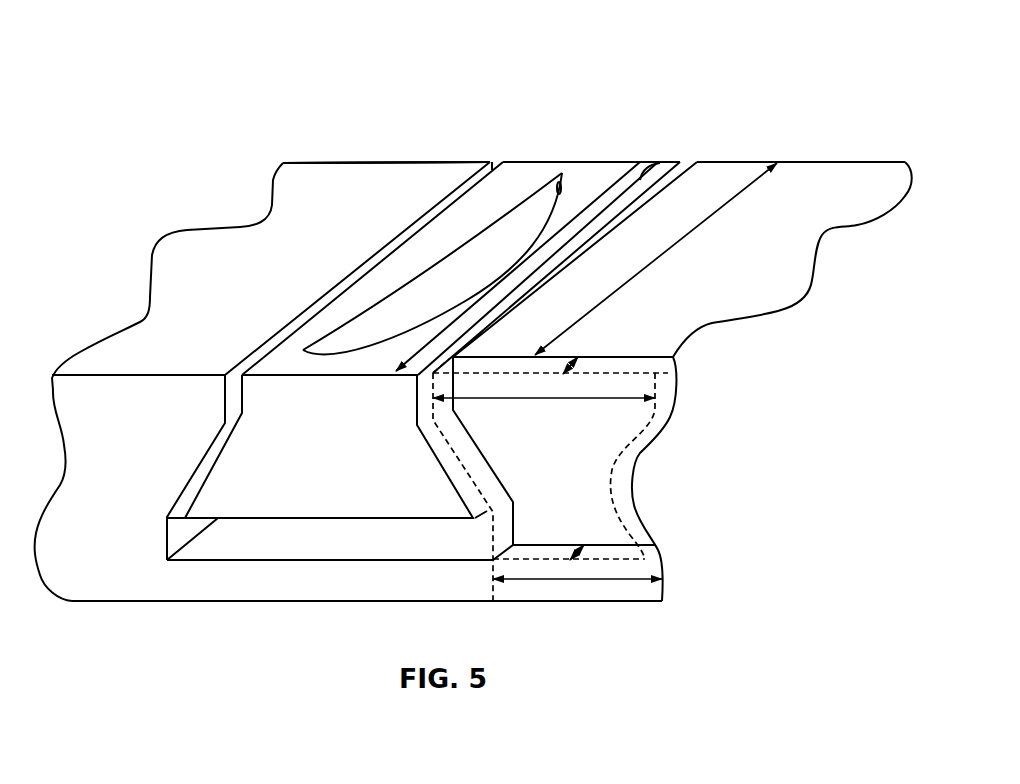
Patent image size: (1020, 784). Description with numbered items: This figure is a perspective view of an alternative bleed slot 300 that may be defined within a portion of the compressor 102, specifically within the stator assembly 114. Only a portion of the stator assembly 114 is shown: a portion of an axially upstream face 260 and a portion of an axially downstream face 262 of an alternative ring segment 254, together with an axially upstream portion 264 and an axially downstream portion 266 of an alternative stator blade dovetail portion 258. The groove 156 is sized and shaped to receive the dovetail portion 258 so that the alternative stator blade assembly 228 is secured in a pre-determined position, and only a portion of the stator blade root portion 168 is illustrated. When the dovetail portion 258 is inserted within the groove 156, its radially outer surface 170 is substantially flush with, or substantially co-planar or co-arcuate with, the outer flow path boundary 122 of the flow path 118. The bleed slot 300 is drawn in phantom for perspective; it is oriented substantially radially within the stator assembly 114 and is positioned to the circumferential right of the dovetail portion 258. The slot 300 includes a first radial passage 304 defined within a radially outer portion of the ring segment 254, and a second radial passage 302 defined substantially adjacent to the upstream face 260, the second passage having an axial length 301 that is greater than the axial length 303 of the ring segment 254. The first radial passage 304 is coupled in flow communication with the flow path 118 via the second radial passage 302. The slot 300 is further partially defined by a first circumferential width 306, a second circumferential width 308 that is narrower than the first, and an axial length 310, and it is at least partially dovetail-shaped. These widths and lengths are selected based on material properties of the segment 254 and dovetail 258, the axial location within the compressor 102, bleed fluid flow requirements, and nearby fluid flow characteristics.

The compressor 102 is at (216, 43).
The stator assembly 114 is at (299, 100).
The flow path 118 is at (788, 122).
The outer flow path boundary 122 is at (594, 181).
The stator blade groove 156 is at (196, 548).
The stator blade root portion 168 is at (566, 172).
The radially outer surface 170 is at (538, 268).
The stator blade assembly 228 is at (548, 148).
The ring segment 254 is at (880, 296).
The stator blade dovetail portion 258 is at (358, 293).
The axially upstream face 260 is at (700, 381).
The axially downstream face 262 is at (392, 156).
The axially upstream portion 264 is at (327, 446).
The axially downstream portion 266 is at (649, 149).
The bleed slot 300 is at (675, 557).
The axial length 301 is at (689, 161).
The second radial passage 302 is at (630, 415).
The axial length 303 is at (740, 194).
The first radial passage 304 is at (608, 588).
The first circumferential width 306 is at (556, 400).
The second circumferential width 308 is at (550, 580).
The axial length 310 is at (566, 374).